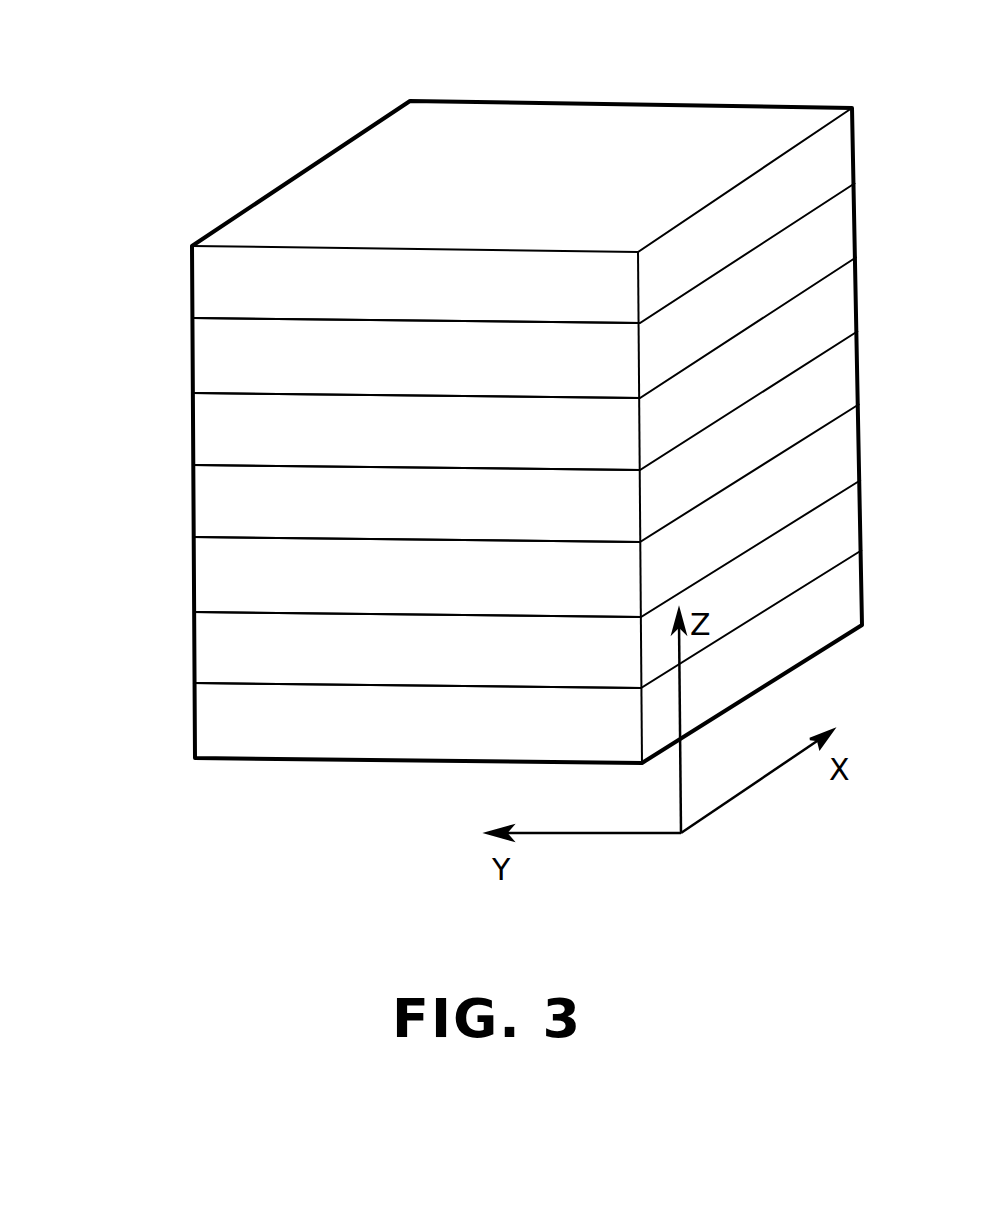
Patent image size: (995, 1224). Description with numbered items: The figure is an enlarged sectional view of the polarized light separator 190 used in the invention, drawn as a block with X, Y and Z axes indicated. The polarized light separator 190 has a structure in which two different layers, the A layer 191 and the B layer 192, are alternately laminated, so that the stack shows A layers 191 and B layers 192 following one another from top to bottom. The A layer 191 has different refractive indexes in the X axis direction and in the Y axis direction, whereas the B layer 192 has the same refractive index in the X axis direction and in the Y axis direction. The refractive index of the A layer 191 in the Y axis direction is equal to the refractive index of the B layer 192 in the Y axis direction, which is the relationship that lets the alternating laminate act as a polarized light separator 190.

The polarized light separator 190 is at (588, 140).
The A layer 191 is at (210, 263).
The B layer 192 is at (213, 352).